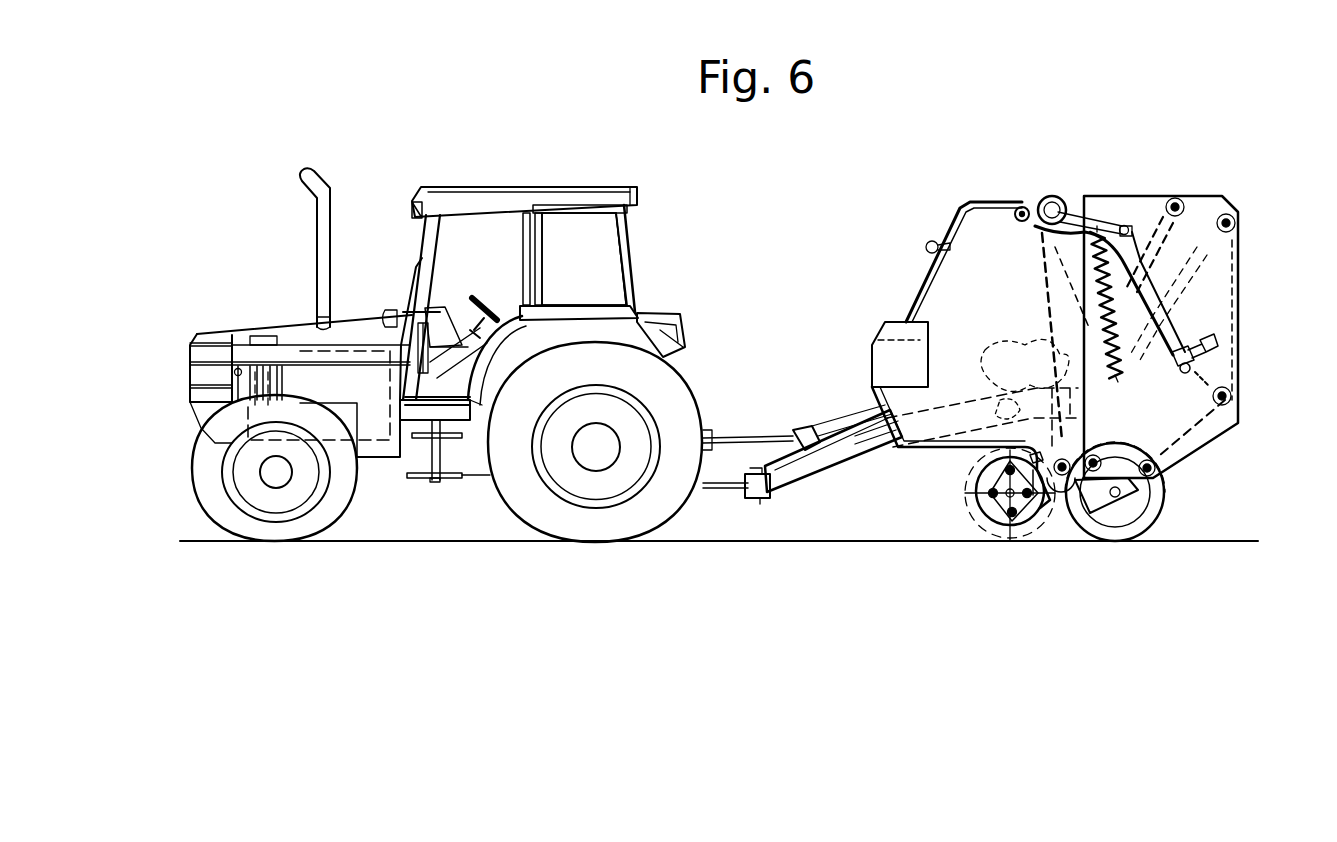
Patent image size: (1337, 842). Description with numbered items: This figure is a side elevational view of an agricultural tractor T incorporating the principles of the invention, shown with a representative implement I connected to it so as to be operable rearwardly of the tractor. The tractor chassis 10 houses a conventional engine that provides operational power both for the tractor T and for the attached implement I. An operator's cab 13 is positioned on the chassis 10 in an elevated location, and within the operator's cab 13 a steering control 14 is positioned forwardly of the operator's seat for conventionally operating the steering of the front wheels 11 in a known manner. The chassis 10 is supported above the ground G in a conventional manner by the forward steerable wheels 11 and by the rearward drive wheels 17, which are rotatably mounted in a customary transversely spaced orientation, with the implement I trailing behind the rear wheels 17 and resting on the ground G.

The tractor T is at (600, 185).
The implement I is at (1012, 200).
The ground G is at (1196, 541).
The tractor chassis 10 is at (373, 458).
The front wheels 11 is at (216, 502).
The operator's cab 13 is at (630, 240).
The steering control 14 is at (470, 298).
The rearward drive wheels 17 is at (664, 508).